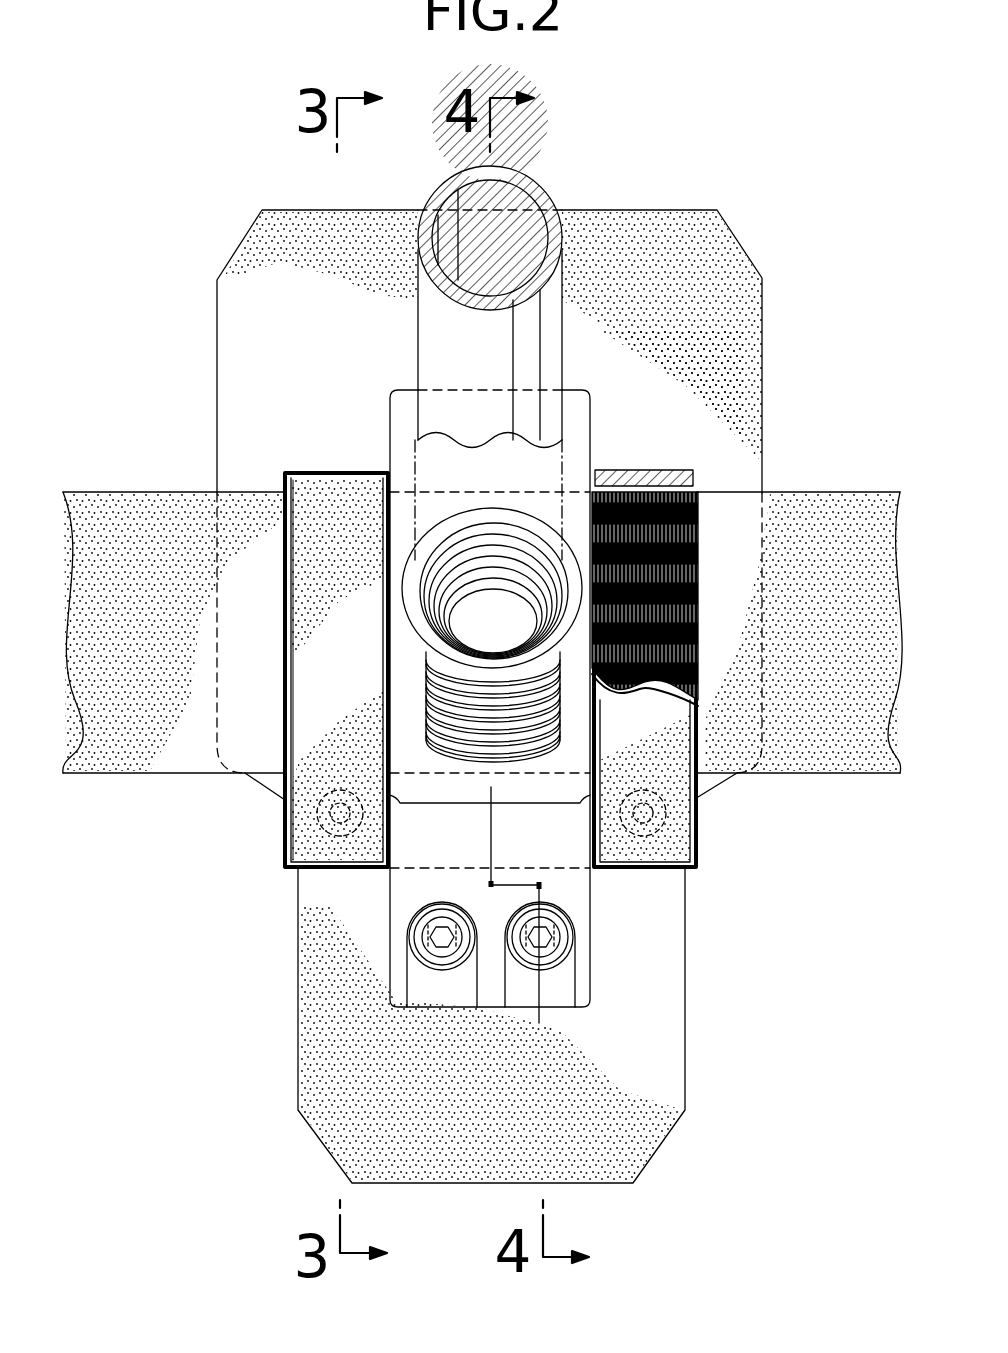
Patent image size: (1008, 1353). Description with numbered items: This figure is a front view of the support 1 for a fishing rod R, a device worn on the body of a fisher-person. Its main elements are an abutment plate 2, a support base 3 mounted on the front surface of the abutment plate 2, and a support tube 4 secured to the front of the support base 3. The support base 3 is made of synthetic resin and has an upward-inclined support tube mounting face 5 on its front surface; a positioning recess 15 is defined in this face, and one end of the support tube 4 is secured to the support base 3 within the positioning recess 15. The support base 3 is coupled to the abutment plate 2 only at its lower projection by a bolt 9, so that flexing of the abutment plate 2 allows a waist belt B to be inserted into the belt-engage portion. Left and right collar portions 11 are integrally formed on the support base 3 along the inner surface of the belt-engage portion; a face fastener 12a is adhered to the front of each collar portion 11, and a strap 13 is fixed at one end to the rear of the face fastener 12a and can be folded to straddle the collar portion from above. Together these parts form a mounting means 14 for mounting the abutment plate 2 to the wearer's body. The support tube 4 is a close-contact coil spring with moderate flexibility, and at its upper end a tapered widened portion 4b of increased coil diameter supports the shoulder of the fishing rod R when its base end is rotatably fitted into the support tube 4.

The support for the fishing rod 1 is at (774, 258).
The abutment plate 2 is at (748, 347).
The support base 3 is at (580, 446).
The support tube 4 is at (455, 617).
The tapered widened portion 4b is at (462, 518).
The support tube mounting face 5 is at (531, 455).
The bolt 9 is at (553, 962).
The collar portions 11 is at (283, 830).
The face fastener 12a is at (672, 563).
The strap 13 is at (655, 474).
The mounting means 14 is at (326, 462).
The positioning recess 15 is at (525, 702).
The fishing rod R is at (526, 182).
The waist belt B is at (871, 492).